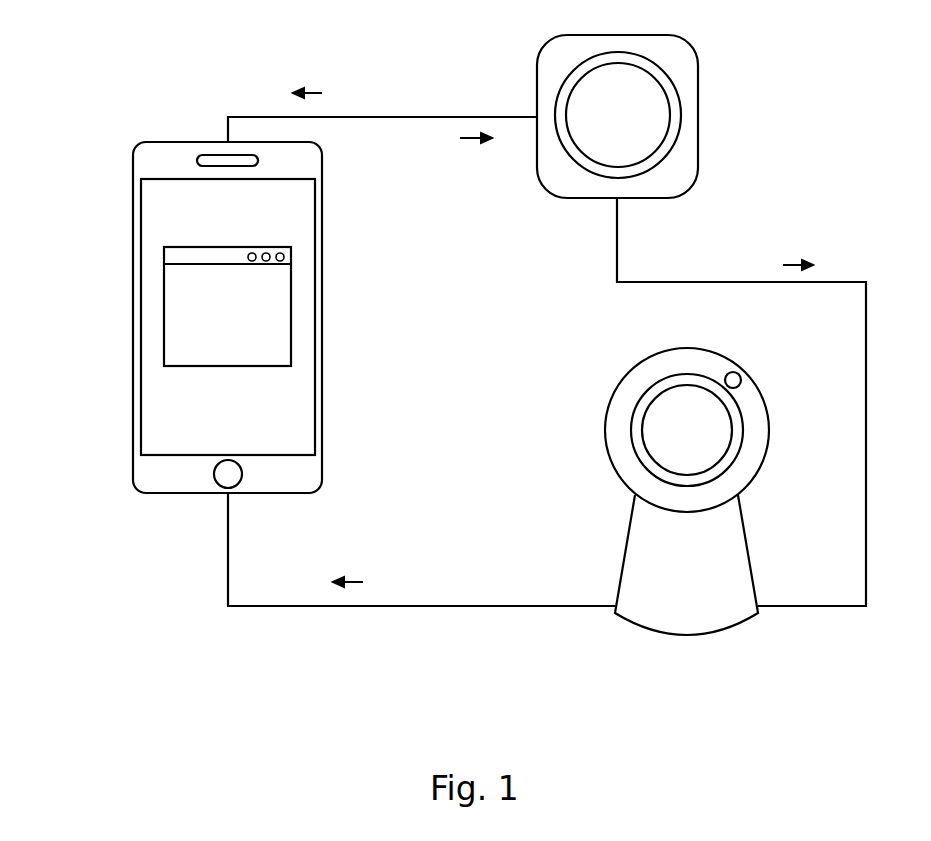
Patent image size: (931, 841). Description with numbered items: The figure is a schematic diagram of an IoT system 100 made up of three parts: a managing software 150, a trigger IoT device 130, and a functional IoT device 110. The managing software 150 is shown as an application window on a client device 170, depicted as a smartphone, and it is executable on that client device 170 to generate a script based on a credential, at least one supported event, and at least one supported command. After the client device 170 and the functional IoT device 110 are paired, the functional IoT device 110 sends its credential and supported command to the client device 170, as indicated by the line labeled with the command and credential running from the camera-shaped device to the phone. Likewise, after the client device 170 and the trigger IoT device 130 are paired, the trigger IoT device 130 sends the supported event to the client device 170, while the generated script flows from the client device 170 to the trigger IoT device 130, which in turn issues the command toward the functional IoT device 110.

The IoT system 100 is at (120, 23).
The functional IoT device 110 is at (605, 429).
The trigger IoT device 130 is at (698, 88).
The managing software 150 is at (165, 297).
The client device 170 is at (135, 397).